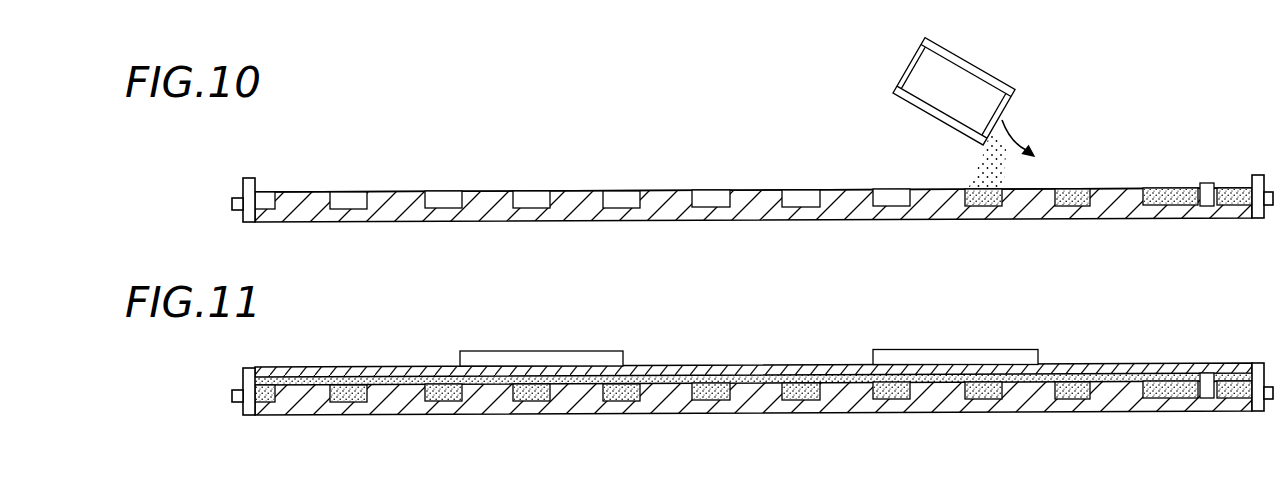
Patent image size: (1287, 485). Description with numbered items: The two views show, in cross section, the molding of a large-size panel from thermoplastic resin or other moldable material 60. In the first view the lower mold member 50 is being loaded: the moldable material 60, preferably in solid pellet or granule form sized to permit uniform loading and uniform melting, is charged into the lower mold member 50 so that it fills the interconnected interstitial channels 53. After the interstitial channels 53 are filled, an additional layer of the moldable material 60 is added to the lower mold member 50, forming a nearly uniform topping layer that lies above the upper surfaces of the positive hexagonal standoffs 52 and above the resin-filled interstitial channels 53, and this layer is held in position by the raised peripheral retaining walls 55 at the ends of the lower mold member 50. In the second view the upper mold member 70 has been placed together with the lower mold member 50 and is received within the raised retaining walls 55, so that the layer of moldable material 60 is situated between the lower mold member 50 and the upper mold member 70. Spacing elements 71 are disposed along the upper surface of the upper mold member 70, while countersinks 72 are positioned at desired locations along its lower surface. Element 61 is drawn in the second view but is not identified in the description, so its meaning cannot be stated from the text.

In FIG. 10, the lower mold member 50 is at (1117, 219).
In FIG. 11, the lower mold member 50 is at (1118, 412).
In FIG. 10, the positive hexagonal standoffs 52 is at (663, 191).
In FIG. 10, the interstitial channels 53 is at (893, 195).
In FIG. 10, the raised peripheral retaining walls 55 is at (257, 182).
In FIG. 11, the raised peripheral retaining walls 55 is at (240, 374).
In FIG. 10, the moldable material 60 is at (1023, 185).
In FIG. 11, the powder layer 61 is at (1133, 372).
In FIG. 11, the upper mold member 70 is at (1206, 372).
In FIG. 11, the spacing elements 71 is at (968, 349).
In FIG. 11, the countersinks 72 is at (576, 382).